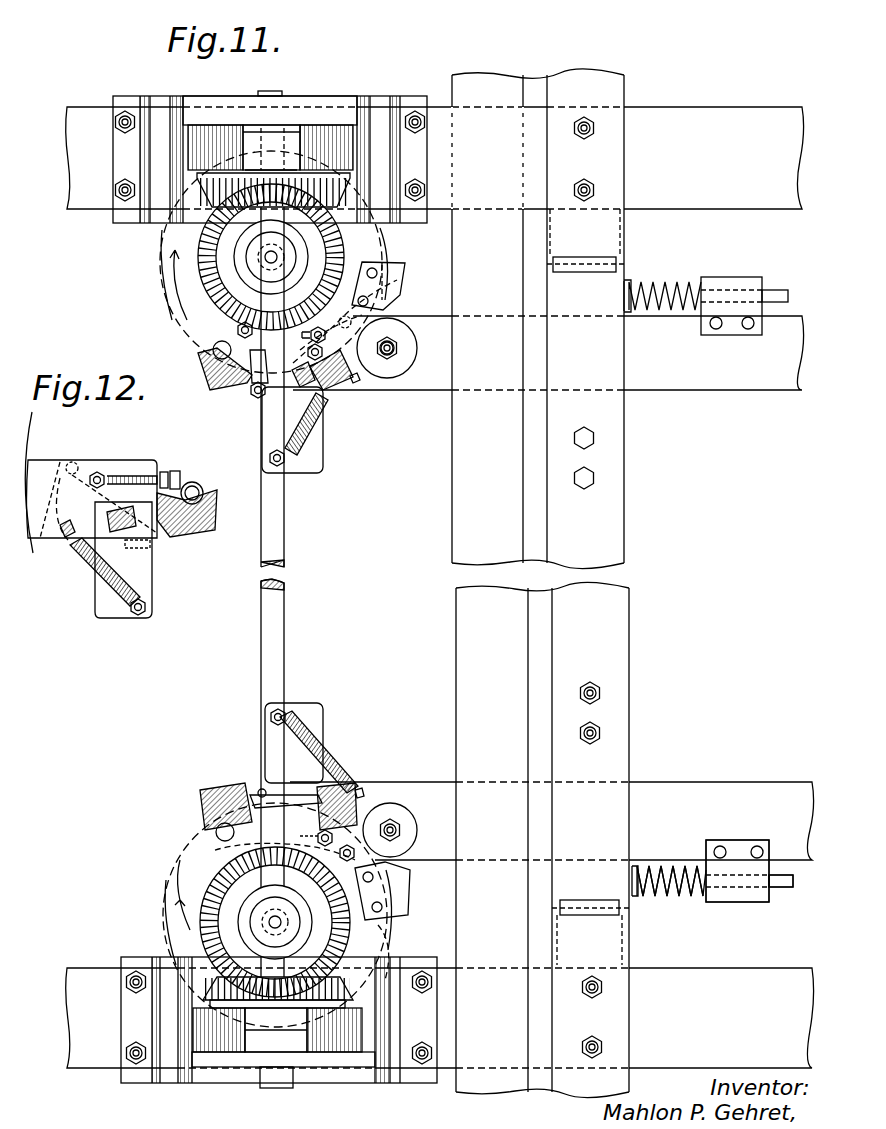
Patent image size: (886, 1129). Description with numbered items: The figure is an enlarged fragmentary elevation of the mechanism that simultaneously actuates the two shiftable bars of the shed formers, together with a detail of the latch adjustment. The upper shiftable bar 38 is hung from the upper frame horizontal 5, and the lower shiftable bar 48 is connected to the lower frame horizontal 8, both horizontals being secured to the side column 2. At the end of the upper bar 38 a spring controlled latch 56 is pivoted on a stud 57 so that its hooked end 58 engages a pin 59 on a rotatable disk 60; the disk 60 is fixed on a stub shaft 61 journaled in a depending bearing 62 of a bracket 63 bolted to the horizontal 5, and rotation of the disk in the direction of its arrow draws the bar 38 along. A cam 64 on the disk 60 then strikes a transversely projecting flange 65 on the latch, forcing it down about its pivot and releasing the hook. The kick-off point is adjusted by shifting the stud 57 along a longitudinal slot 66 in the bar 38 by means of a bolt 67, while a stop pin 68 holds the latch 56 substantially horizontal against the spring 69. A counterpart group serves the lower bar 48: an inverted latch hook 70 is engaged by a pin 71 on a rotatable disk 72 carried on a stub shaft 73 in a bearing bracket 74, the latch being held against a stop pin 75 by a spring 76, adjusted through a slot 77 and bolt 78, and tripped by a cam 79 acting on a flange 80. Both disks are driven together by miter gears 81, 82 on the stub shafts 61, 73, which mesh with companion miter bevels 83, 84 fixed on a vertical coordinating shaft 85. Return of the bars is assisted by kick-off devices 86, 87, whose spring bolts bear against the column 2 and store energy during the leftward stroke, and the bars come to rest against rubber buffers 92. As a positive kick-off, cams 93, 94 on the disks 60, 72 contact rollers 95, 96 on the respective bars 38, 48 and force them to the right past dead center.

In FIG. 11, the intermediate side column 2 is at (615, 605).
In FIG. 11, the upper frame horizontal 5 is at (435, 158).
In FIG. 11, the lower frame horizontal 8 is at (440, 1018).
In FIG. 11, the shiftable bar 38 is at (548, 353).
In FIG. 11, the shiftable bar 48 is at (795, 781).
In FIG. 11, the spring controlled latch 56 is at (217, 392).
In FIG. 11, the stud 57 is at (363, 313).
In FIG. 12, the stud 57 is at (100, 475).
In FIG. 11, the hooked end 58 is at (202, 358).
In FIG. 12, the hooked end 58 is at (205, 525).
In FIG. 11, the pin 59 is at (215, 345).
In FIG. 12, the pin 59 is at (205, 493).
In FIG. 11, the rotatable disk 60 is at (160, 262).
In FIG. 12, the rotatable disk 60 is at (70, 478).
In FIG. 11, the stub shaft 61 is at (205, 290).
In FIG. 11, the depending bearing 62 is at (308, 118).
In FIG. 11, the bracket 63 is at (160, 104).
In FIG. 11, the cam 64 is at (307, 395).
In FIG. 11, the transversely projecting flange 65 is at (258, 394).
In FIG. 12, the transversely projecting flange 65 is at (140, 555).
In FIG. 11, the longitudinal slot 66 is at (343, 345).
In FIG. 12, the longitudinal slot 66 is at (78, 468).
In FIG. 12, the bolt 67 is at (177, 476).
In FIG. 11, the stop pin 68 is at (372, 296).
In FIG. 12, the stop pin 68 is at (45, 522).
In FIG. 11, the spring 69 is at (317, 430).
In FIG. 12, the spring 69 is at (82, 562).
In FIG. 11, the latch hook 70 is at (212, 793).
In FIG. 11, the pin 71 is at (216, 830).
In FIG. 11, the rotatable disk 72 is at (182, 830).
In FIG. 11, the stub shaft 73 is at (378, 934).
In FIG. 11, the bearing bracket 74 is at (160, 1084).
In FIG. 11, the stop pin 75 is at (355, 846).
In FIG. 11, the spring 76 is at (320, 742).
In FIG. 11, the slot 77 is at (322, 808).
In FIG. 11, the bolt 78 is at (220, 856).
In FIG. 11, the cam 79 is at (250, 796).
In FIG. 11, the flange 80 is at (260, 790).
In FIG. 11, the miter gear 81 is at (300, 172).
In FIG. 11, the miter gear 82 is at (195, 893).
In FIG. 11, the miter bevel 83 is at (205, 203).
In FIG. 11, the miter bevel 84 is at (212, 975).
In FIG. 11, the vertical coordinating shaft 85 is at (286, 592).
In FIG. 11, the kick-off device 86 is at (718, 305).
In FIG. 11, the kick-off device 87 is at (712, 843).
In FIG. 11, the buffer 92 is at (575, 272).
In FIG. 11, the cam 93 is at (393, 270).
In FIG. 11, the cam 94 is at (400, 886).
In FIG. 11, the roller 95 is at (402, 358).
In FIG. 11, the roller 96 is at (400, 812).